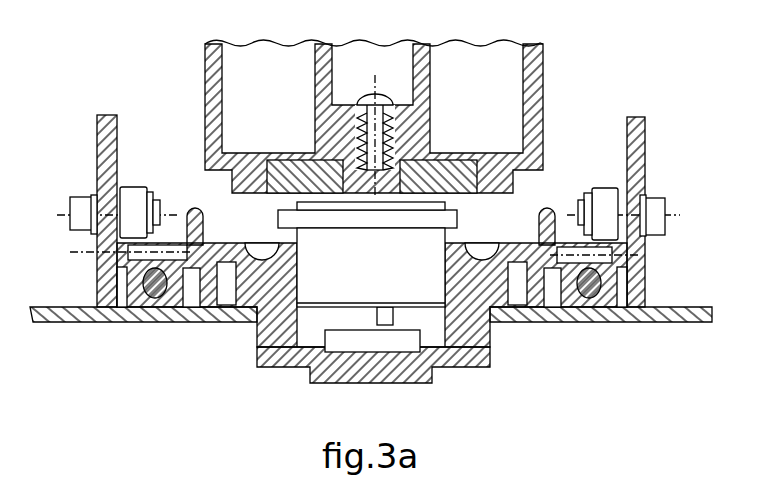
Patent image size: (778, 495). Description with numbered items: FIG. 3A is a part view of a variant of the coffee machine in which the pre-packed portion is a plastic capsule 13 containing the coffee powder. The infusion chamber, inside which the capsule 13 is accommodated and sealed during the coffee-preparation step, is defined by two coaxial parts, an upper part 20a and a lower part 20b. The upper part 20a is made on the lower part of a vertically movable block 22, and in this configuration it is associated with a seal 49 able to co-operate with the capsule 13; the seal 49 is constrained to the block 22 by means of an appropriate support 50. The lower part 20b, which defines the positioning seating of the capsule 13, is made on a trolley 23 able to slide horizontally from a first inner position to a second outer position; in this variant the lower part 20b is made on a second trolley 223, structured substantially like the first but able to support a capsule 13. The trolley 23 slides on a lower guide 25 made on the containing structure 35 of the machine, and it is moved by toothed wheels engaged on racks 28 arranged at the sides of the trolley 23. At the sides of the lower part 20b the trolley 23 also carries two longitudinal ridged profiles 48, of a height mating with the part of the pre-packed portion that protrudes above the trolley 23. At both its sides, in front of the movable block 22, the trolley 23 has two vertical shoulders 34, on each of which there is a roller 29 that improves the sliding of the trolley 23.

The plastic capsule 13 is at (317, 301).
The upper part of the infusion chamber 20a is at (480, 197).
The lower part of the infusion chamber 20b is at (290, 244).
The vertically movable block 22 is at (537, 94).
The trolley 23 is at (247, 288).
The lower guide 25 is at (470, 362).
The rack 28 is at (128, 252).
The roller 29 is at (128, 194).
The vertical shoulder 34 is at (104, 125).
The containing structure 35 is at (558, 42).
The longitudinal ridged profile 48 is at (197, 213).
The seal 49 is at (447, 167).
The support 50 is at (307, 160).
The second trolley 223 is at (532, 301).